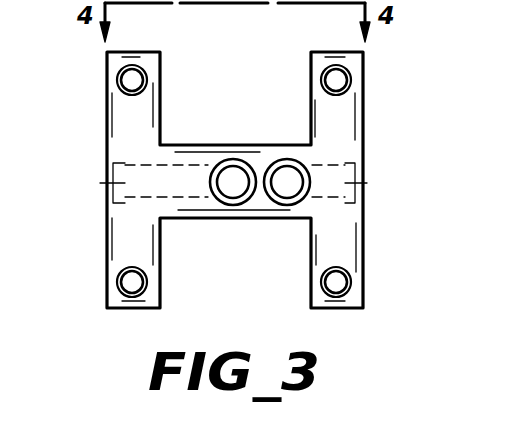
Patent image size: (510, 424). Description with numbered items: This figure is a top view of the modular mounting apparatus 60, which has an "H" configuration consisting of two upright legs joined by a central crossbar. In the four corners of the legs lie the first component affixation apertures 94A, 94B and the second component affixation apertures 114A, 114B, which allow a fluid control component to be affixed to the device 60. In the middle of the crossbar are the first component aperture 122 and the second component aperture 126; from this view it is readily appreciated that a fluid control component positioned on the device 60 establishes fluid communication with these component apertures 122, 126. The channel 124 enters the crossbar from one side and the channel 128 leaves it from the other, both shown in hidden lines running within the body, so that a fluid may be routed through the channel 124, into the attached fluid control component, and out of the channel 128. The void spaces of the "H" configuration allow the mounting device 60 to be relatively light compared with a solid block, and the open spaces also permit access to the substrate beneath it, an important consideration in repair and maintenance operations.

The modular mounting apparatus 60 is at (222, 230).
The first component affixation aperture 94A is at (133, 80).
The first component affixation aperture 94B is at (131, 282).
The second component affixation aperture 114A is at (337, 283).
The second component affixation aperture 114B is at (334, 82).
The first component aperture 122 is at (238, 160).
The second component aperture 126 is at (280, 198).
The channel 124 is at (100, 189).
The channel 128 is at (370, 186).